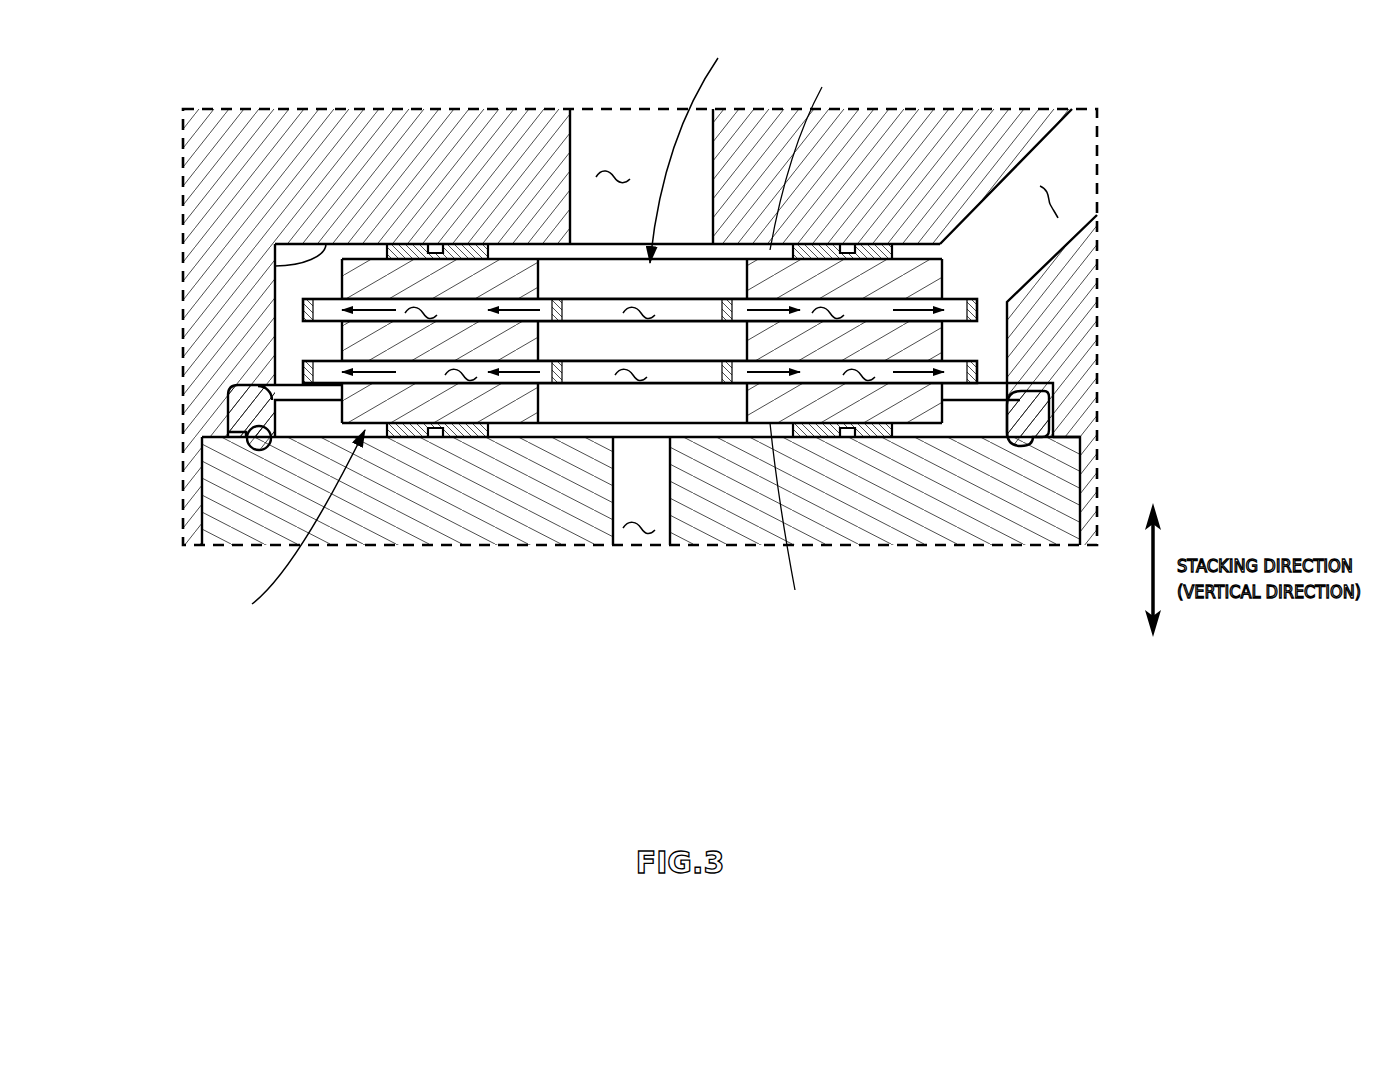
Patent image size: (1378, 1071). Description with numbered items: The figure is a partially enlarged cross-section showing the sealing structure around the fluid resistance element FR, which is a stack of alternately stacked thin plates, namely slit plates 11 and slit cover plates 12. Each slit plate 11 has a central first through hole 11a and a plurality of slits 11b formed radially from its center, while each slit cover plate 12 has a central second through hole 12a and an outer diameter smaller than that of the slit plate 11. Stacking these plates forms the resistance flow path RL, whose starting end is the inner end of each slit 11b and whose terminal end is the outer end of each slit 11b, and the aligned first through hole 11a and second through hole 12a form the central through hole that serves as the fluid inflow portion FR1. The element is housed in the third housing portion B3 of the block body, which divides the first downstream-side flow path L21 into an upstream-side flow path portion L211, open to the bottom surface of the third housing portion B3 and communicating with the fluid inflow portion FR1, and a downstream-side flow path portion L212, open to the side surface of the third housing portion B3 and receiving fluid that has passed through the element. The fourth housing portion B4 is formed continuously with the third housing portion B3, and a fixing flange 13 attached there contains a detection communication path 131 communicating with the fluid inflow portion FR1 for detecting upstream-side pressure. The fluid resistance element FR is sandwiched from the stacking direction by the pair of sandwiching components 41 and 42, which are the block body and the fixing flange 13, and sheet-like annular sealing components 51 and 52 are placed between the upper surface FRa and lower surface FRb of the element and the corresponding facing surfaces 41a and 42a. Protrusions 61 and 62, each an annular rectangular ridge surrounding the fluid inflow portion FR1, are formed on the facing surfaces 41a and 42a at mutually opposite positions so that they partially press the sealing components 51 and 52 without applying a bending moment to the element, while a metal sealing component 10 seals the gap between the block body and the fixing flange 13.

The sandwiching component 41 is at (526, 143).
The facing surface 41a is at (273, 266).
The upstream-side flow path portion L211 is at (617, 170).
The downstream-side flow path portion L212 is at (1052, 202).
The first downstream-side flow path L21 is at (1114, 349).
The third housing portion B3 is at (270, 348).
The slit cover plate 12 is at (945, 279).
The second through hole 12a is at (676, 293).
The slit plate 11 is at (303, 310).
The first through hole 11a is at (637, 322).
The slit 11b is at (862, 366).
The resistance flow path RL is at (652, 326).
The sealing component 51 is at (385, 246).
The sealing component 52 is at (893, 433).
The protrusion 61 is at (436, 246).
The protrusion 62 is at (848, 437).
The fourth housing portion B4 is at (200, 497).
The fixing flange 13 is at (509, 528).
The sandwiching component 42 is at (577, 533).
The facing surface 42a is at (315, 434).
The detection communication path 131 is at (640, 533).
The sealing component 10 is at (260, 448).
The fluid resistance element FR is at (291, 530).
The fluid inflow portion FR1 is at (705, 148).
The upper surface FRa is at (806, 156).
The lower surface FRb is at (790, 518).